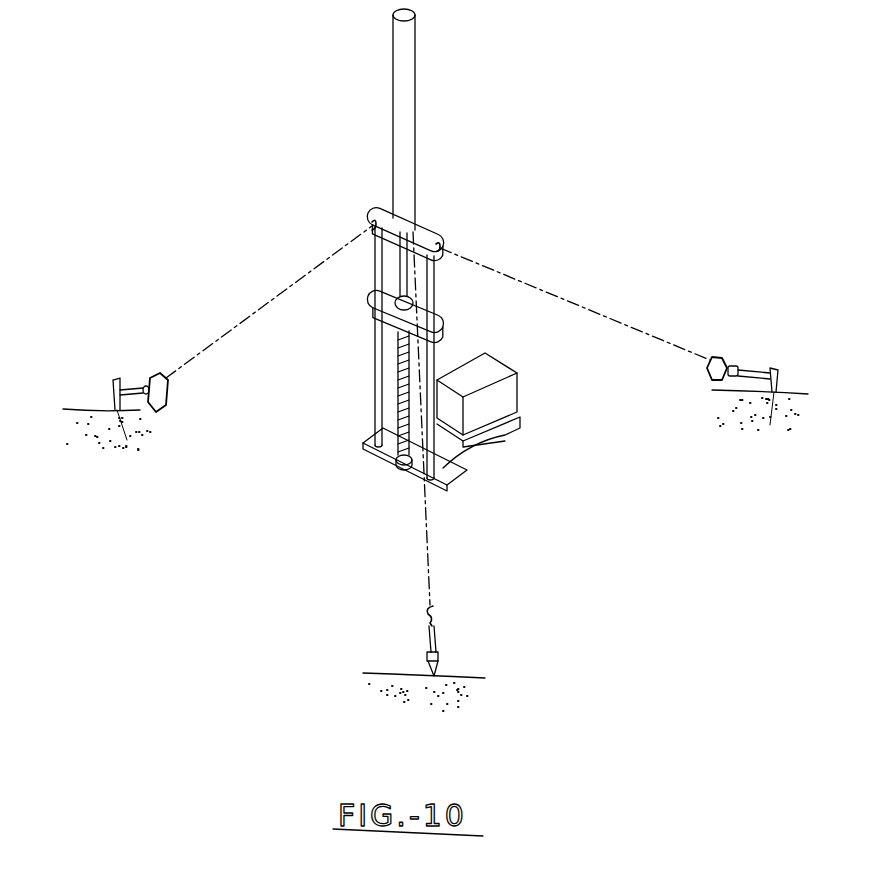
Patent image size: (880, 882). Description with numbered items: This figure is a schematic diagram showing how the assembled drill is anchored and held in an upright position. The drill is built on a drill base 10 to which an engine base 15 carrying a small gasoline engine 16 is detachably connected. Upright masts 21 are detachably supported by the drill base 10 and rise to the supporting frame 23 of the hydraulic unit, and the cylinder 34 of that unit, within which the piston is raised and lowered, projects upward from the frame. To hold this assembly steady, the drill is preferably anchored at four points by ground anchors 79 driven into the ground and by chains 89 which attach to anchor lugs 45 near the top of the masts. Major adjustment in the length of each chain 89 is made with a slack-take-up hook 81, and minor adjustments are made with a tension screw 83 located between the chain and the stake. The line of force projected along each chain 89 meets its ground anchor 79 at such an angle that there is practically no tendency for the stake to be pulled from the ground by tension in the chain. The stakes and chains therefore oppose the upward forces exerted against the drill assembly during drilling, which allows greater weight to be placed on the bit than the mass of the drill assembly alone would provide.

The drill base 10 is at (385, 472).
The engine base 15 is at (519, 428).
The gasoline engine 16 is at (518, 384).
The upright masts 21 is at (375, 375).
The supporting frame 23 is at (443, 210).
The cylinder 34 is at (416, 106).
The anchor lugs 45 is at (372, 226).
The ground anchors 79 is at (115, 380).
The slack-take-up hook 81 is at (714, 360).
The tension screw 83 is at (736, 370).
The chains 89 is at (340, 252).